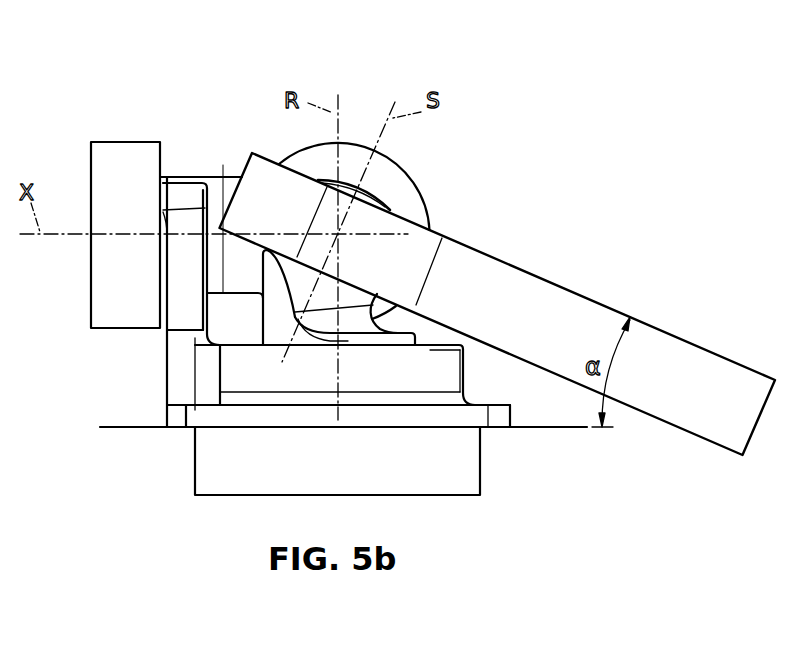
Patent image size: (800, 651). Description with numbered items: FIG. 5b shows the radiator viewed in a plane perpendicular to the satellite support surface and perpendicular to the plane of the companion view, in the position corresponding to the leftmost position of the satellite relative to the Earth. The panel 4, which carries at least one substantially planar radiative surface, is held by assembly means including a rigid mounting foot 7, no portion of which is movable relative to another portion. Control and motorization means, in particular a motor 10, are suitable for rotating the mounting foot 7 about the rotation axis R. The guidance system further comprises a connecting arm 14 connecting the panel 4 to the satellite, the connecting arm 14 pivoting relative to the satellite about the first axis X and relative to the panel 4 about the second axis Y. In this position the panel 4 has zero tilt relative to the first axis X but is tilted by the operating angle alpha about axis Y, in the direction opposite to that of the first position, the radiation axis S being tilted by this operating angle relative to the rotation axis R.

The panel 4 is at (708, 372).
The mounting foot 7 is at (357, 322).
The motor 10 is at (352, 473).
The connecting arm 14 is at (125, 137).